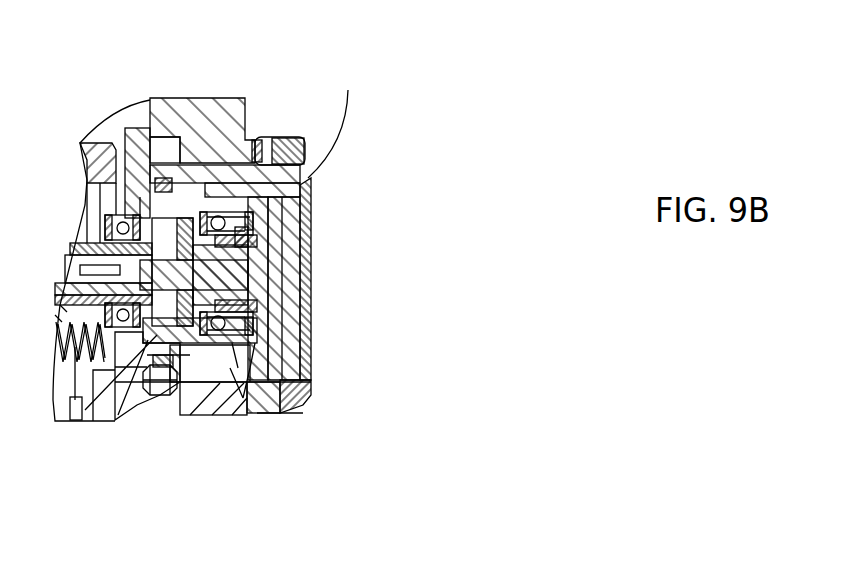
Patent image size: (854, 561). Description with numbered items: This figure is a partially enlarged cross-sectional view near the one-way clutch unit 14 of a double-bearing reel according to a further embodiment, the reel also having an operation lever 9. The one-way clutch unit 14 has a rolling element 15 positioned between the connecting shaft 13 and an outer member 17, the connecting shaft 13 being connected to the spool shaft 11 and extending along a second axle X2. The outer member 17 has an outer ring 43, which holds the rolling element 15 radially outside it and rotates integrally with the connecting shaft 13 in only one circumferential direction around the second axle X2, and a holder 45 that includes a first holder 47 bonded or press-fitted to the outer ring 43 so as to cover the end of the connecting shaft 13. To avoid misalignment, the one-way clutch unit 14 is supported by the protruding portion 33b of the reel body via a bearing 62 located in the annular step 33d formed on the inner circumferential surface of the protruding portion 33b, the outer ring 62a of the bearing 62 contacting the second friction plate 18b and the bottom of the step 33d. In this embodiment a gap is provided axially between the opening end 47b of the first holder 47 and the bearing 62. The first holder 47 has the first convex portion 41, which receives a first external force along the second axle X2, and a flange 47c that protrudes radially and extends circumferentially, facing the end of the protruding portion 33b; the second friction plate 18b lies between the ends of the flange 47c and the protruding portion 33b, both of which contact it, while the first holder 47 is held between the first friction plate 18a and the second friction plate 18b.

The operation lever 9 is at (210, 97).
The spool shaft 11 is at (86, 240).
The connecting shaft 13 is at (150, 185).
The one-way clutch unit 14 is at (300, 136).
The rolling element 15 is at (300, 262).
The outer member 17 is at (179, 226).
The first friction plate 18a is at (312, 312).
The second friction plate 18b is at (280, 413).
The protruding portion 33b is at (137, 405).
The annular step 33d is at (150, 400).
The first convex portion 41 is at (300, 280).
The outer ring 43 is at (311, 207).
The holder 45 is at (179, 319).
The first holder 47 is at (302, 352).
The opening end 47b is at (223, 415).
The flange 47c is at (245, 415).
The bearing 62 is at (208, 415).
The outer ring of the bearing 62a is at (168, 395).
The second axle X2 is at (60, 272).